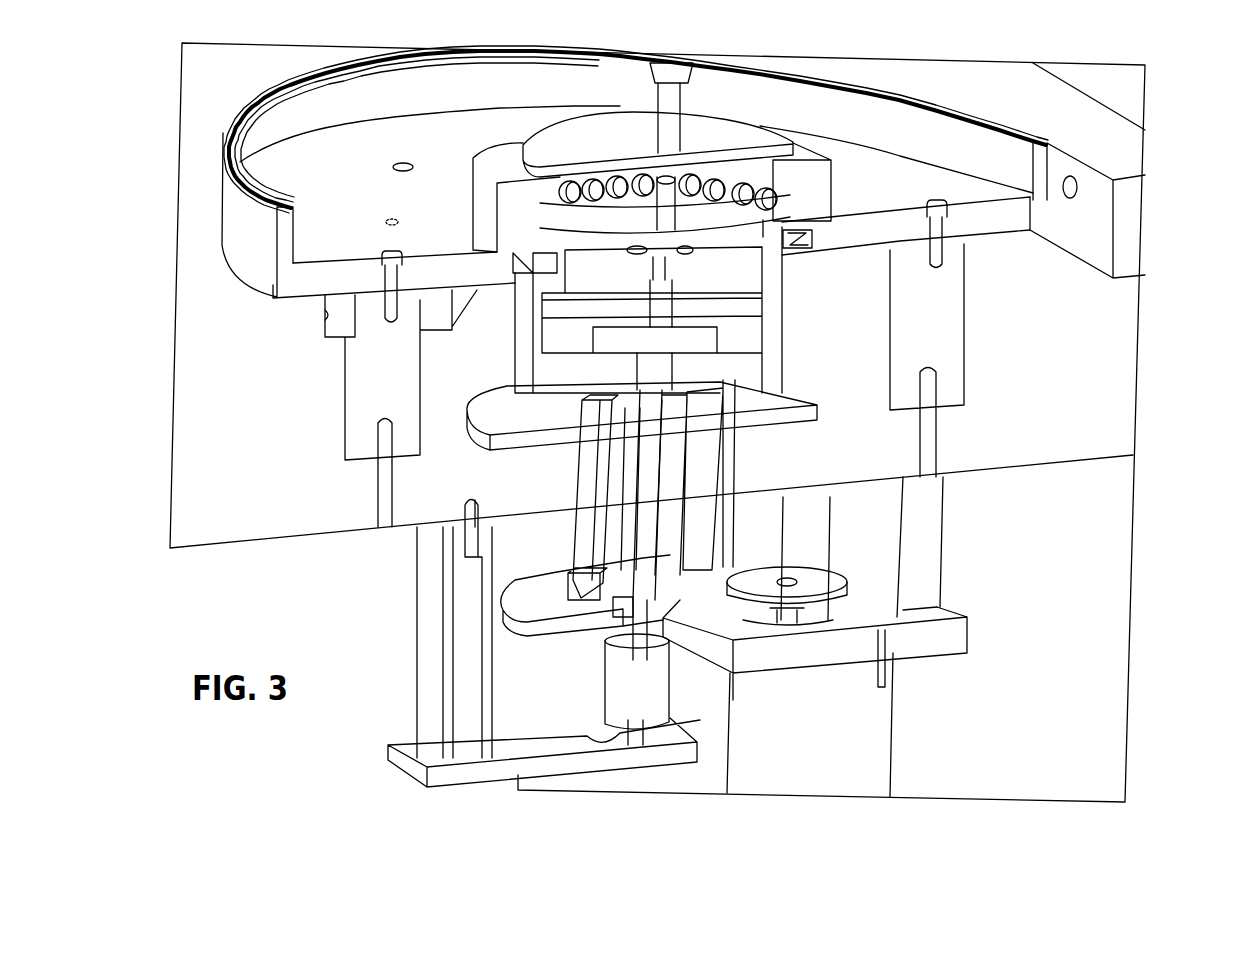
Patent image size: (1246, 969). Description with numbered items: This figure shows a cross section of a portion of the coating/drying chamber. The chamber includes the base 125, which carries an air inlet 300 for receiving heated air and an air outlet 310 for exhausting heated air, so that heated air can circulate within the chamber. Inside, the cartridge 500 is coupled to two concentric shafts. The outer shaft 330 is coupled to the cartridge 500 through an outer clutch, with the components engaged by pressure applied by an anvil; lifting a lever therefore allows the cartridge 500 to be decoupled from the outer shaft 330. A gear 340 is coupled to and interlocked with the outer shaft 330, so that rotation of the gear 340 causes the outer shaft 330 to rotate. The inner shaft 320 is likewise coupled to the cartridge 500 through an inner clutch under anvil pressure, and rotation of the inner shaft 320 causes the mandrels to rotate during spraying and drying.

The base 125 is at (288, 257).
The air inlet 300 is at (945, 208).
The air outlet 310 is at (398, 253).
The inner shaft 320 is at (557, 568).
The outer shaft 330 is at (567, 527).
The gear 340 is at (810, 600).
The cartridge 500 is at (500, 157).